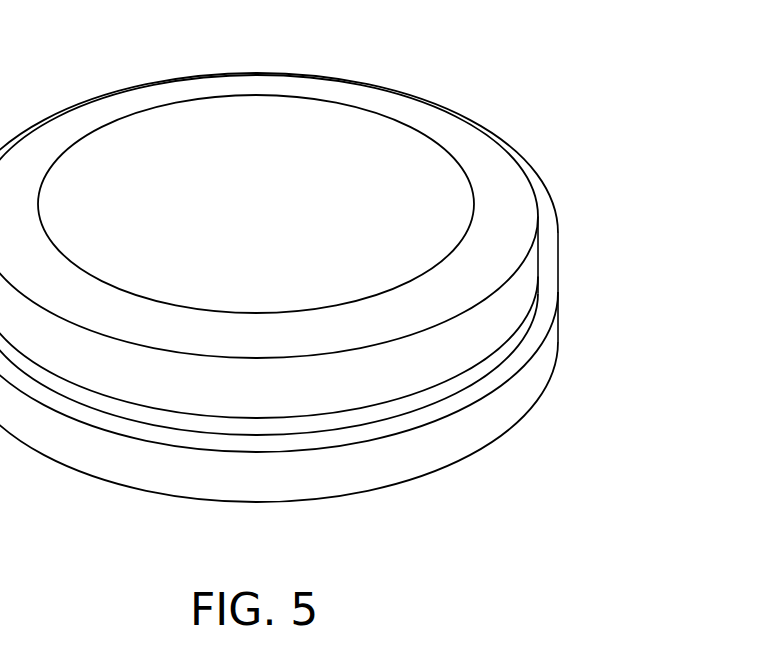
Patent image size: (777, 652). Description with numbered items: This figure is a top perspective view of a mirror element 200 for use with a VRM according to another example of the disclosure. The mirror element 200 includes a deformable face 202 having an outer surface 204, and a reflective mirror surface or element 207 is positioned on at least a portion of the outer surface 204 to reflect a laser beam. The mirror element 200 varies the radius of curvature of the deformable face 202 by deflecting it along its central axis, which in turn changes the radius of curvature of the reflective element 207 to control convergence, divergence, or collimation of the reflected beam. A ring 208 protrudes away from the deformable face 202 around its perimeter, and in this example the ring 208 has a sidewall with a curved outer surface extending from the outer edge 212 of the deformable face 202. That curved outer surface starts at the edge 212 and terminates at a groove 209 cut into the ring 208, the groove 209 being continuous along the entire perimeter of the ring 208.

The mirror element 200 is at (541, 58).
The deformable face 202 is at (443, 192).
The outer surface 204 is at (157, 80).
The reflective mirror surface or element 207 is at (282, 128).
The ring 208 is at (493, 422).
The groove 209 is at (542, 323).
The outer edge 212 is at (538, 235).